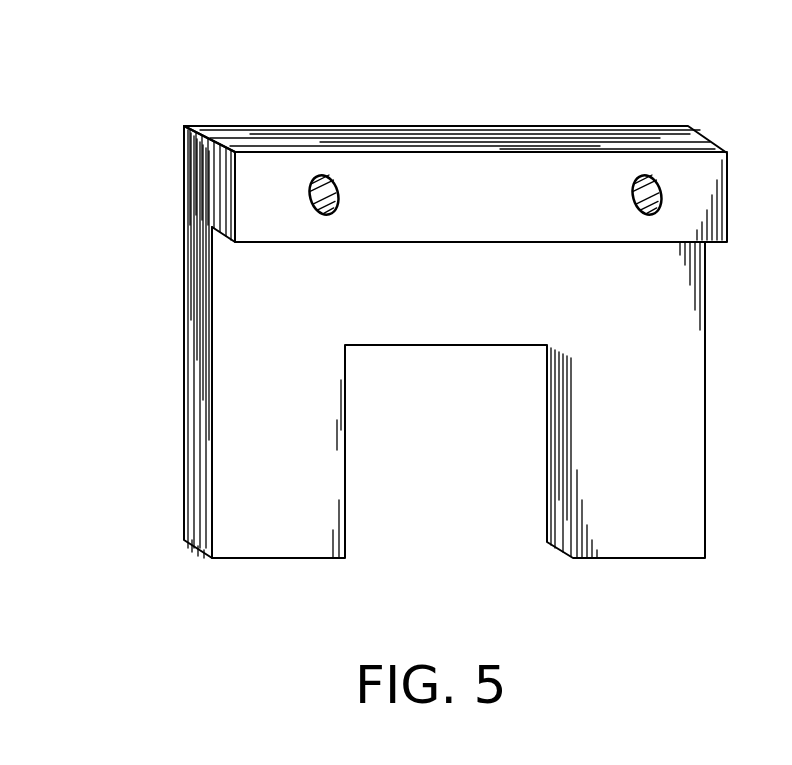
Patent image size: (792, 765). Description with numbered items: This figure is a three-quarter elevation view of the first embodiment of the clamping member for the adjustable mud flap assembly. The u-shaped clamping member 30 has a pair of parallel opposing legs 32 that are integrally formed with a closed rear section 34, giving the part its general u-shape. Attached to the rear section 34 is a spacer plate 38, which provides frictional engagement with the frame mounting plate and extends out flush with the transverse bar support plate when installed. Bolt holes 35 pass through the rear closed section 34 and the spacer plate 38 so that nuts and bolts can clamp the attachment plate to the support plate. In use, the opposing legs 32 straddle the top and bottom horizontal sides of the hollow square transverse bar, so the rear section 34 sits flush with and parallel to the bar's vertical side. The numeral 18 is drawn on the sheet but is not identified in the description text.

The u-shaped clamping member 30 is at (409, 53).
The block body 18 is at (243, 293).
The parallel opposing legs 32 is at (590, 558).
The closed rear section 34 is at (490, 306).
The bolt holes 35 is at (340, 196).
The spacer plate 38 is at (570, 150).